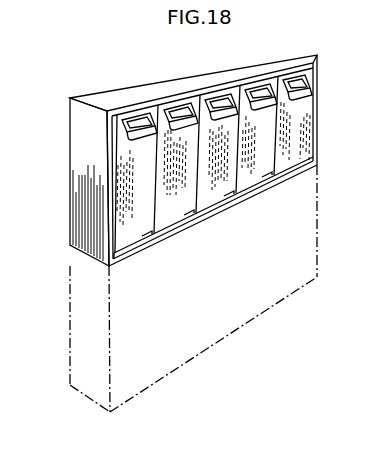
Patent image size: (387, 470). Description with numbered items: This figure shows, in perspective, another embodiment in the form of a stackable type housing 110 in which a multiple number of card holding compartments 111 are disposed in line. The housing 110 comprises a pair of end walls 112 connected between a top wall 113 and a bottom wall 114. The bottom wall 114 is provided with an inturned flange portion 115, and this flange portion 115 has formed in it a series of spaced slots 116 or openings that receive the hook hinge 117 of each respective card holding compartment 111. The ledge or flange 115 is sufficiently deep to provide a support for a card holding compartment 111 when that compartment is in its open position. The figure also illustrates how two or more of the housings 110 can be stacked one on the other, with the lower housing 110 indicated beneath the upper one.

The stackable type housing 110 is at (326, 61).
The card holding compartments 111 is at (167, 140).
The end walls 112 is at (82, 197).
The top wall 113 is at (257, 60).
The bottom wall 114 is at (280, 184).
The inturned flange portion 115 is at (228, 197).
The slots 116 is at (143, 233).
The hook hinge 117 is at (176, 216).